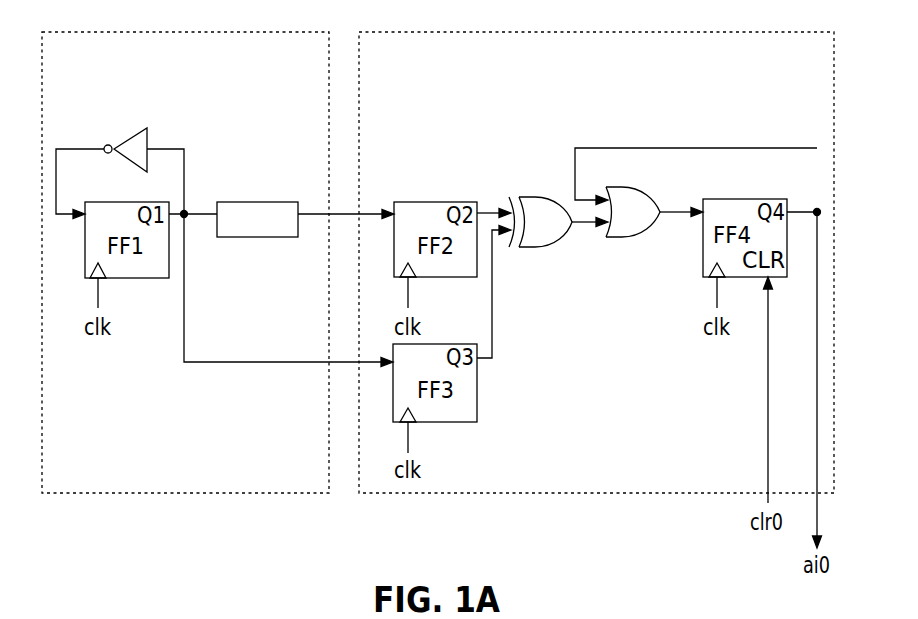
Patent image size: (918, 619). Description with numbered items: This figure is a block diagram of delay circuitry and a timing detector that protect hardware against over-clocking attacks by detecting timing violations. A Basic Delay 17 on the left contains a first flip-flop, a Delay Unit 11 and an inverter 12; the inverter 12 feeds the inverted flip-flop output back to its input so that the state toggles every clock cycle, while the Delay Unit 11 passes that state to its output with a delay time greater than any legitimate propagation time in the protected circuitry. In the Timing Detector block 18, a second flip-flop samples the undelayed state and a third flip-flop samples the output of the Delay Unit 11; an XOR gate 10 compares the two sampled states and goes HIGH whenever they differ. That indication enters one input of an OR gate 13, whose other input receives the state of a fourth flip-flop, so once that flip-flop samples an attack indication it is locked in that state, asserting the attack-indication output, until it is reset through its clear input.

The XOR gate 10 is at (553, 248).
The Delay Unit 11 is at (280, 200).
The inverter 12 is at (130, 140).
The OR gate 13 is at (641, 237).
The Basic Delay 17 is at (255, 493).
The Timing Detector block 18 is at (658, 493).